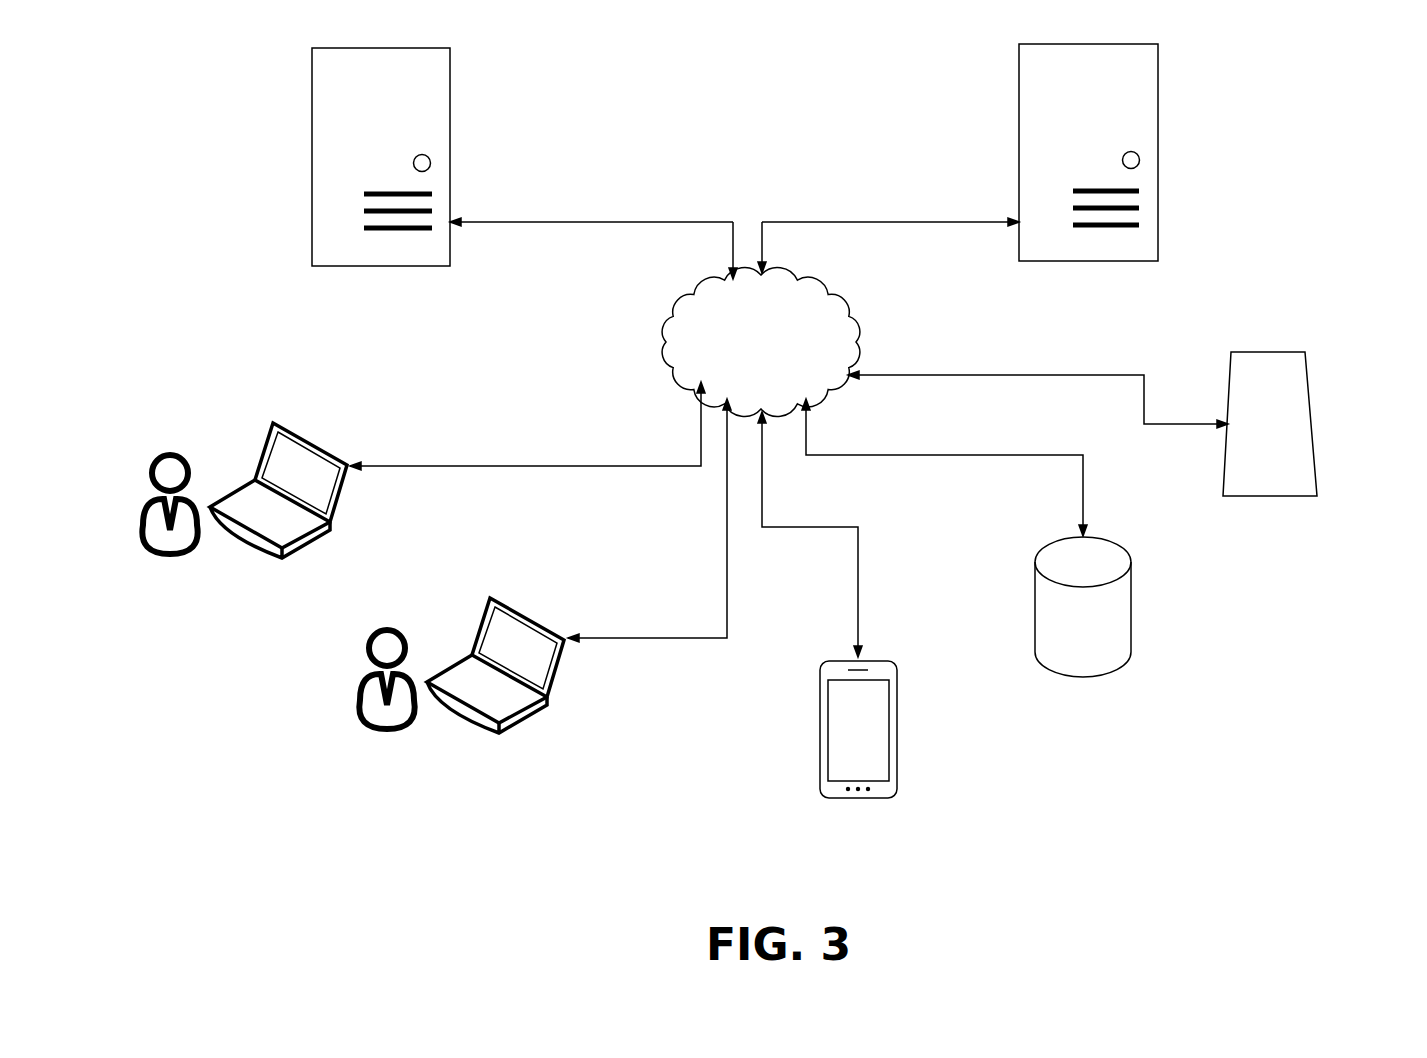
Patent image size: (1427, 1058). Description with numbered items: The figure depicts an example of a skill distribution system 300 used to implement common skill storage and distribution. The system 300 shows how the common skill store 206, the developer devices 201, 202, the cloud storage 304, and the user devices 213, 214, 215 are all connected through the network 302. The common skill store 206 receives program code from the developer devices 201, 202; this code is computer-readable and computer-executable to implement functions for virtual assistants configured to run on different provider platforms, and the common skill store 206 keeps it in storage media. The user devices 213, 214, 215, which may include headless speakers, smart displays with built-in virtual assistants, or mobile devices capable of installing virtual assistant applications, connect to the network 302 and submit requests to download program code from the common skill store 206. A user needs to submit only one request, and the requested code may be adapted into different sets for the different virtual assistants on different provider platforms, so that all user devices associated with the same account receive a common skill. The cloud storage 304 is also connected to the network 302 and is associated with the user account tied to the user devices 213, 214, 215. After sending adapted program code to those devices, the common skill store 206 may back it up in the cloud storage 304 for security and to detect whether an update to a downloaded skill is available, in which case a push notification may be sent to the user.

The skill distribution system 300 is at (1402, 81).
The common skill store 206 is at (450, 75).
The cloud storage 304 is at (1158, 62).
The network 302 is at (818, 283).
The user device 213 is at (1305, 352).
The user device 214 is at (1108, 537).
The user device 215 is at (888, 660).
The developer device 201 is at (300, 430).
The developer device 202 is at (518, 605).